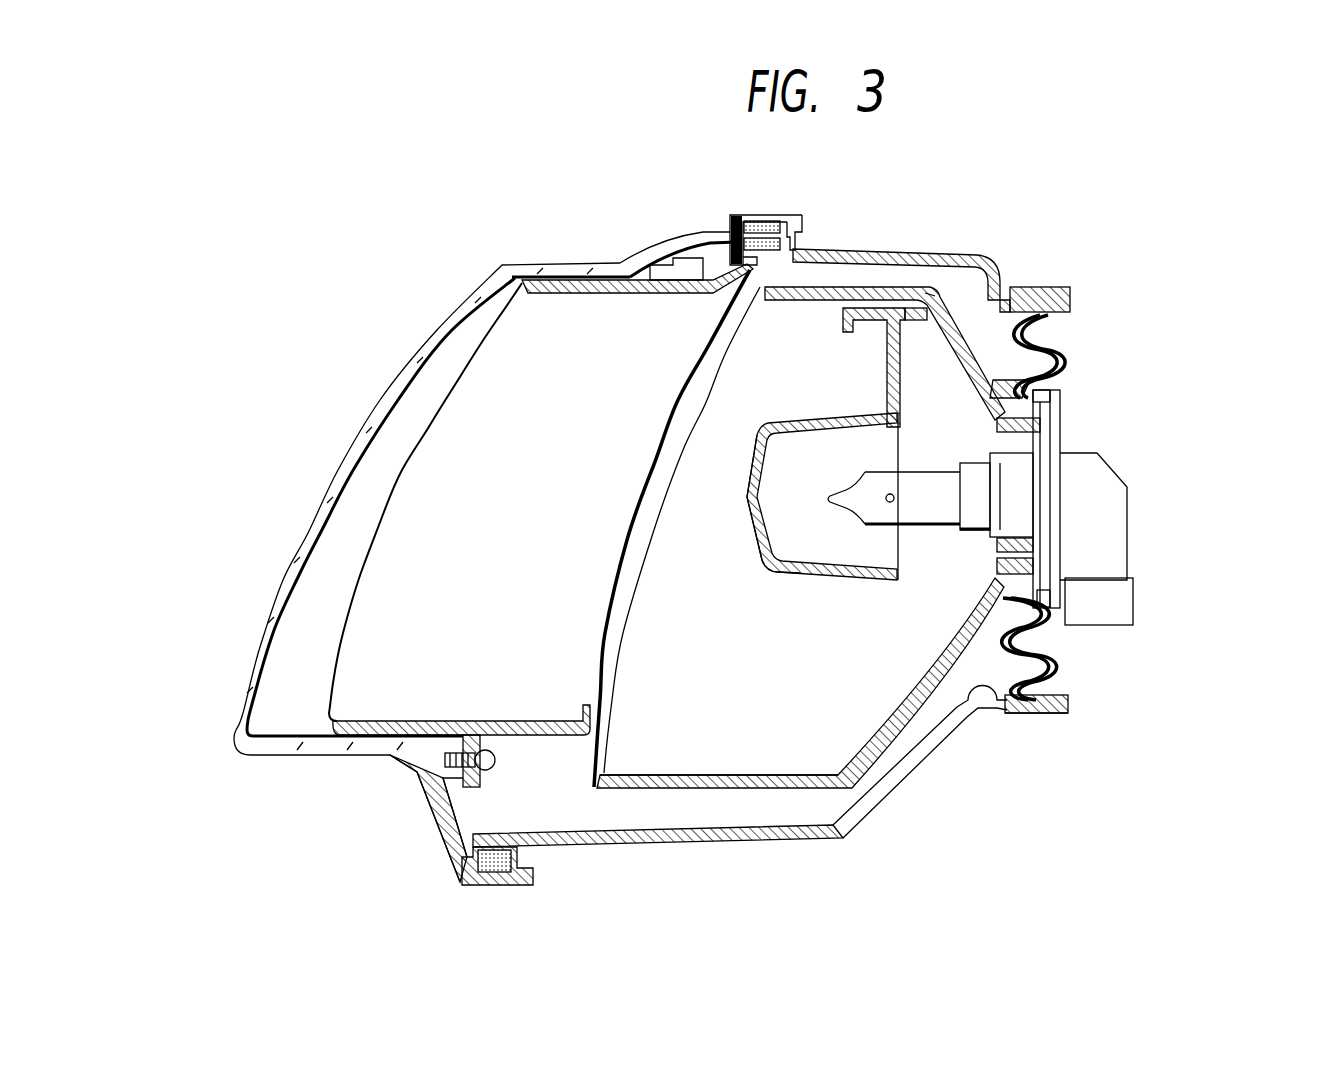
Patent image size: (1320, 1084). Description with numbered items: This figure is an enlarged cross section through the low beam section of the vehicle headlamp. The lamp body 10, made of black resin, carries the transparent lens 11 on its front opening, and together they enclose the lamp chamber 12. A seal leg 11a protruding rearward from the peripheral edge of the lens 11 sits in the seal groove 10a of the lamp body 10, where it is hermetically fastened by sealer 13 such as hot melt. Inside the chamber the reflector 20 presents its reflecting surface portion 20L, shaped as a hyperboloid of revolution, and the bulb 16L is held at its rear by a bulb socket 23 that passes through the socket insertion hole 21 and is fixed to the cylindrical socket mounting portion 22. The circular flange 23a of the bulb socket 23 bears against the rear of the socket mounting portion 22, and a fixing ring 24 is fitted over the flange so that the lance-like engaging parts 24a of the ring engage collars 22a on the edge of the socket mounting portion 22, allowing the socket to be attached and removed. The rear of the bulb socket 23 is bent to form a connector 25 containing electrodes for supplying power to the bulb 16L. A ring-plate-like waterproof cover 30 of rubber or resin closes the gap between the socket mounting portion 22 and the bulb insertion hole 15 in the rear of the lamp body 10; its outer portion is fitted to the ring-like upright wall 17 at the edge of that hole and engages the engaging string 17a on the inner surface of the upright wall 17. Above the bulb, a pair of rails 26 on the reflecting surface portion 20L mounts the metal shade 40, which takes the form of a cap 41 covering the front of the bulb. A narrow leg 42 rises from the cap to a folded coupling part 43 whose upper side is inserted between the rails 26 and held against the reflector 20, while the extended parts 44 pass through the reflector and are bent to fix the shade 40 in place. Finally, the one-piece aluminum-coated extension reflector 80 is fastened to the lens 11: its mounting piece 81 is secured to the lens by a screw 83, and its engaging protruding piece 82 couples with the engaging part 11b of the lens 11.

The lamp body 10 is at (828, 530).
The seal groove 10a is at (787, 222).
The lens 11 is at (496, 527).
The seal leg 11a is at (763, 221).
The engaging part 11b is at (653, 283).
The lamp chamber 12 is at (297, 635).
The sealer 13 is at (730, 220).
The bulb insertion hole 15 is at (988, 693).
The bulb 16L is at (921, 508).
The upright wall 17 is at (1040, 713).
The engaging string 17a is at (1063, 287).
The reflector 20 is at (817, 552).
The reflecting surface portion 20L is at (703, 773).
The socket insertion hole 21 is at (1045, 458).
The socket mounting portion 22 is at (1085, 558).
The collar 22a is at (1045, 597).
The bulb socket 23 is at (1162, 446).
The circular flange 23a is at (1062, 452).
The fixing ring 24 is at (1100, 499).
The lance-like engaging part 24a is at (1040, 393).
The connector 25 is at (1118, 590).
The rail 26 is at (910, 320).
The waterproof cover 30 is at (1058, 715).
The shade 40 is at (770, 562).
The cap 41 is at (753, 470).
The leg 42 is at (794, 497).
The coupling part 43 is at (843, 313).
The extended part 44 is at (931, 302).
The extension reflector 80 is at (512, 510).
The mounting piece 81 is at (472, 785).
The engaging protruding piece 82 is at (685, 260).
The screw 83 is at (494, 766).